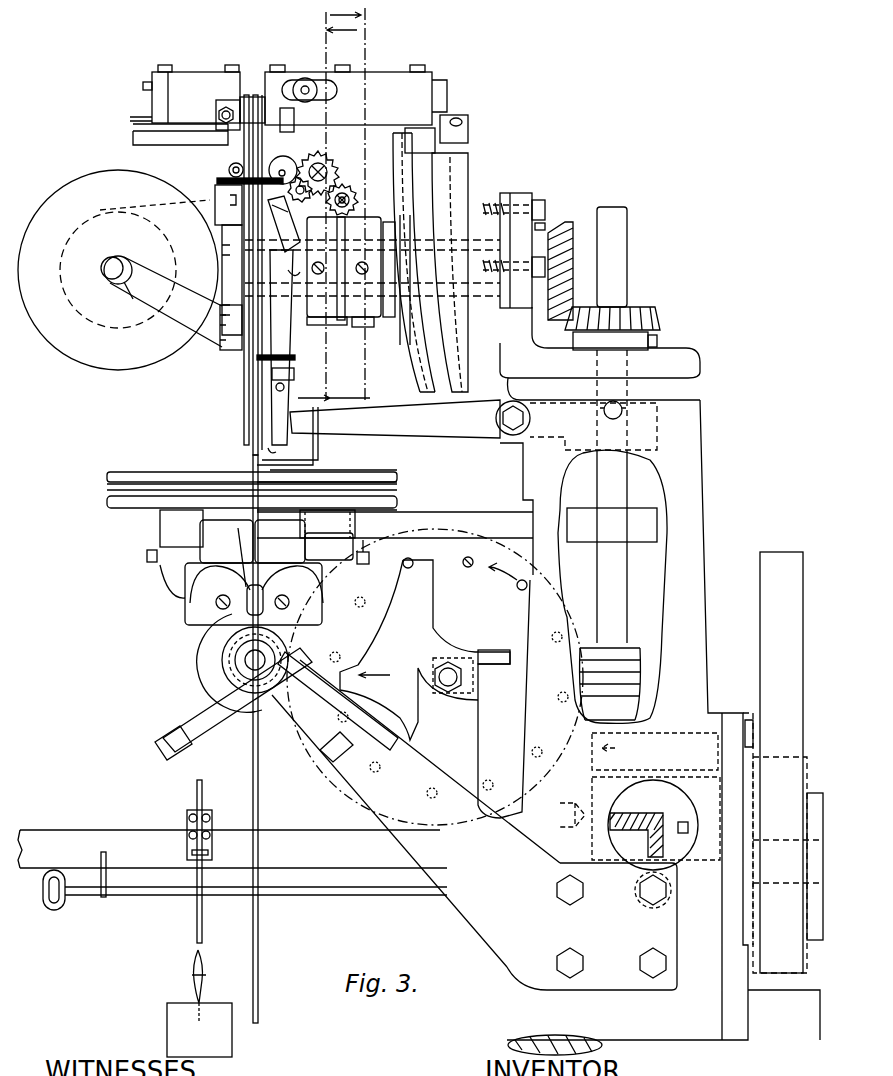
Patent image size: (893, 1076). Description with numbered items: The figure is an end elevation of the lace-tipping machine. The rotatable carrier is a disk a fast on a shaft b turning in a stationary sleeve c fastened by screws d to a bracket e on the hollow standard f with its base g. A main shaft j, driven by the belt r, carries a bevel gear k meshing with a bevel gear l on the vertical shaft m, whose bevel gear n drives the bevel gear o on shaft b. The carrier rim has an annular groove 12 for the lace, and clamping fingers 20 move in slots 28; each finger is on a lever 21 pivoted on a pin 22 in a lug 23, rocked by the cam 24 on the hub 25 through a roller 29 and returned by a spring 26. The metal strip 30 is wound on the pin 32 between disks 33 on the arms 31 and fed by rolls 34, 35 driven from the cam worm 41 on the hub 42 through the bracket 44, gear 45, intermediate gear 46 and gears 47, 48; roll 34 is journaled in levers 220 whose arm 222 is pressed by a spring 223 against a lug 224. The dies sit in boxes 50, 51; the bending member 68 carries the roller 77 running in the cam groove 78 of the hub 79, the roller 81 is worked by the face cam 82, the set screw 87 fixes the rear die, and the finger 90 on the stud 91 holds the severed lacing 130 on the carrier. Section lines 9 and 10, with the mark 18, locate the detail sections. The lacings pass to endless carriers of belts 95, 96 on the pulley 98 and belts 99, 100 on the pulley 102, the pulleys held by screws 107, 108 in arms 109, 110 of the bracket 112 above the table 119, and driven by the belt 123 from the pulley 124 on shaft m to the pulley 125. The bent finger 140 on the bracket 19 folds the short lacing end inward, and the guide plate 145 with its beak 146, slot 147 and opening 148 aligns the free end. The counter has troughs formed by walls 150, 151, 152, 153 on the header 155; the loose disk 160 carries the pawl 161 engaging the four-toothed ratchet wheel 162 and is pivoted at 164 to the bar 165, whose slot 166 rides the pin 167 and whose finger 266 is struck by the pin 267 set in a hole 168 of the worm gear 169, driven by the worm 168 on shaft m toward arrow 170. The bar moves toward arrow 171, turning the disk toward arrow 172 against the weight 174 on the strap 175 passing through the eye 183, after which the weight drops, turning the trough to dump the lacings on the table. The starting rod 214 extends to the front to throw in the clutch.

The section line 9 is at (337, 205).
The section line 10 is at (376, 204).
The annular groove 12 is at (252, 432).
The arrow 18 is at (334, 404).
The bracket or arm 19 is at (478, 437).
The clamping finger 20 is at (280, 357).
The lever 21 is at (290, 355).
The pivot pin or stud 22 is at (292, 377).
The lug or ear 23 is at (285, 387).
The cam 24 is at (307, 268).
The hub 25 is at (316, 325).
The spring 26 is at (284, 224).
The transverse slots 28 is at (247, 358).
The antifriction rollers 29 is at (290, 276).
The metal strip 30 is at (210, 200).
The arms 31 is at (170, 327).
The shaft or pin 32 is at (128, 278).
The disks 33 is at (105, 365).
The feed roll 34 is at (217, 181).
The feed roll 35 is at (296, 154).
The cam worm 41 is at (343, 320).
The hub 42 is at (362, 327).
The bracket 44 is at (334, 198).
The gear 45 is at (358, 198).
The intermediate gear 46 is at (318, 152).
The gear 47 is at (302, 192).
The gear 48 is at (228, 170).
The die block or box 50 is at (348, 95).
The die block or box 51 is at (196, 94).
The bending die member 68 is at (248, 85).
The roller 77 is at (435, 147).
The cam groove 78 is at (425, 178).
The cam hub 79 is at (468, 178).
The roller 81 is at (446, 105).
The face cam 82 is at (468, 122).
The set screw 87 is at (143, 86).
The finger 90 is at (281, 130).
The stud or screw 91 is at (306, 80).
The belt 95 is at (397, 483).
The belt 96 is at (397, 503).
The grooved pulley 98 is at (357, 472).
The belt 99 is at (107, 486).
The belt 100 is at (107, 500).
The grooved pulley 102 is at (124, 474).
The screw 107 is at (365, 550).
The screw 108 is at (152, 551).
The arm 109 is at (312, 557).
The arm 110 is at (197, 556).
The bracket 112 is at (360, 797).
The table 119 is at (78, 830).
The belt 123 is at (470, 512).
The pulley 124 is at (577, 508).
The pulley 125 is at (300, 514).
The tipped lacing 130 is at (258, 935).
The bent finger or arm 140 is at (318, 440).
The guide plate 145 is at (185, 618).
The curved beak or finger 146 is at (239, 549).
The slot 147 is at (235, 590).
The opening 148 is at (292, 584).
The wall 150 is at (165, 590).
The wall 151 is at (160, 740).
The wall 152 is at (320, 748).
The wall 153 is at (322, 617).
The header 155 is at (185, 713).
The pawl carrying disk 160 is at (244, 712).
The pawl 161 is at (222, 650).
The ratchet wheel 162 is at (236, 672).
The pivot 164 is at (292, 700).
The bar 165 is at (425, 650).
The slot 166 is at (518, 633).
The stud or pin 167 is at (452, 692).
The worm 168 is at (520, 590).
The worm gear 169 is at (504, 699).
The arrow 170 is at (524, 581).
The arrow 171 is at (374, 687).
The arrow 172 is at (229, 660).
The weight 174 is at (192, 1000).
The strap 175 is at (202, 920).
The eye or guide 183 is at (208, 853).
The starting rod 214 is at (80, 895).
The arms or levers 220 is at (228, 100).
The arm 222 is at (135, 143).
The spring 223 is at (133, 128).
The lug 224 is at (132, 117).
The finger 266 is at (411, 569).
The stud or pin 267 is at (468, 567).
The disk a is at (243, 407).
The shaft b is at (222, 255).
The stationary sleeve or hub c is at (385, 317).
The screws d is at (503, 275).
The bracket e is at (516, 193).
The hollow upright or standard f is at (702, 475).
The base g is at (800, 757).
The main shaft j is at (790, 880).
The bevel gear k is at (668, 910).
The bevel gear l is at (660, 805).
The vertical shaft m is at (627, 568).
The bevel gear n is at (658, 318).
The bevel gear o is at (560, 222).
The belt r is at (760, 623).